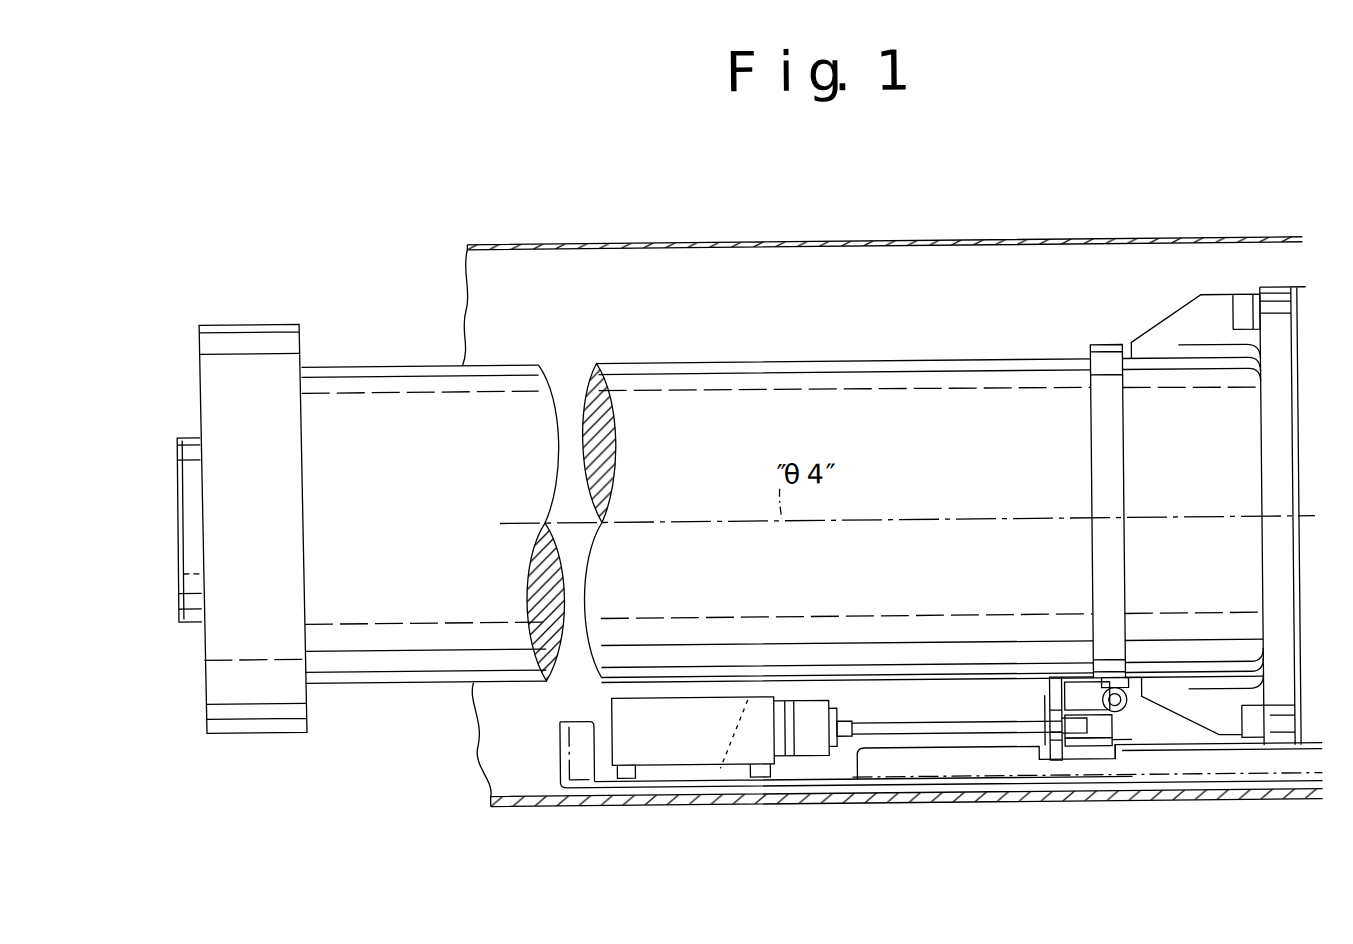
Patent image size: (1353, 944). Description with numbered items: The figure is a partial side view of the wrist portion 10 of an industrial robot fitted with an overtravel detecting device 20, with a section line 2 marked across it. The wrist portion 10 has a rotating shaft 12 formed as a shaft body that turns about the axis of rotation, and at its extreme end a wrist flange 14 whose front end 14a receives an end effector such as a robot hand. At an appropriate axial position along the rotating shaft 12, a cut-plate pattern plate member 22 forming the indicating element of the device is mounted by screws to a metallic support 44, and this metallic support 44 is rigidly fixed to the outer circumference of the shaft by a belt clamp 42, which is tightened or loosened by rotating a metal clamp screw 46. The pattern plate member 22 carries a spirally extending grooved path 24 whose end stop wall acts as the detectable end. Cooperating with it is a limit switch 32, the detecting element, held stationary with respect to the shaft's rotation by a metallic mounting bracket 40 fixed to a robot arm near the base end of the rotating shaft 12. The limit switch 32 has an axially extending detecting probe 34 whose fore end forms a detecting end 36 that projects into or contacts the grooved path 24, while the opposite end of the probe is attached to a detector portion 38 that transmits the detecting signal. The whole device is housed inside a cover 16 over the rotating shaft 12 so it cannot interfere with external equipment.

The section line 2- 2 is at (515, 240).
The wrist portion 10 is at (731, 243).
The rotating shaft 12 is at (806, 364).
The wrist flange 14 is at (274, 329).
The front end 14a is at (178, 604).
The cover 16 is at (646, 243).
The overtravel detecting device 20 is at (1044, 644).
The pattern plate member 22 is at (1048, 690).
The spirally extending grooved path 24 is at (1042, 727).
The limit switch 32 is at (814, 760).
The detecting probe 34 is at (962, 725).
The detecting end 36 is at (1082, 752).
The detector portion 38 is at (703, 706).
The mounting bracket 40 is at (913, 768).
The belt clamp 42 is at (1124, 588).
The metallic support 44 is at (1110, 752).
The clamp screw 46 is at (1142, 700).